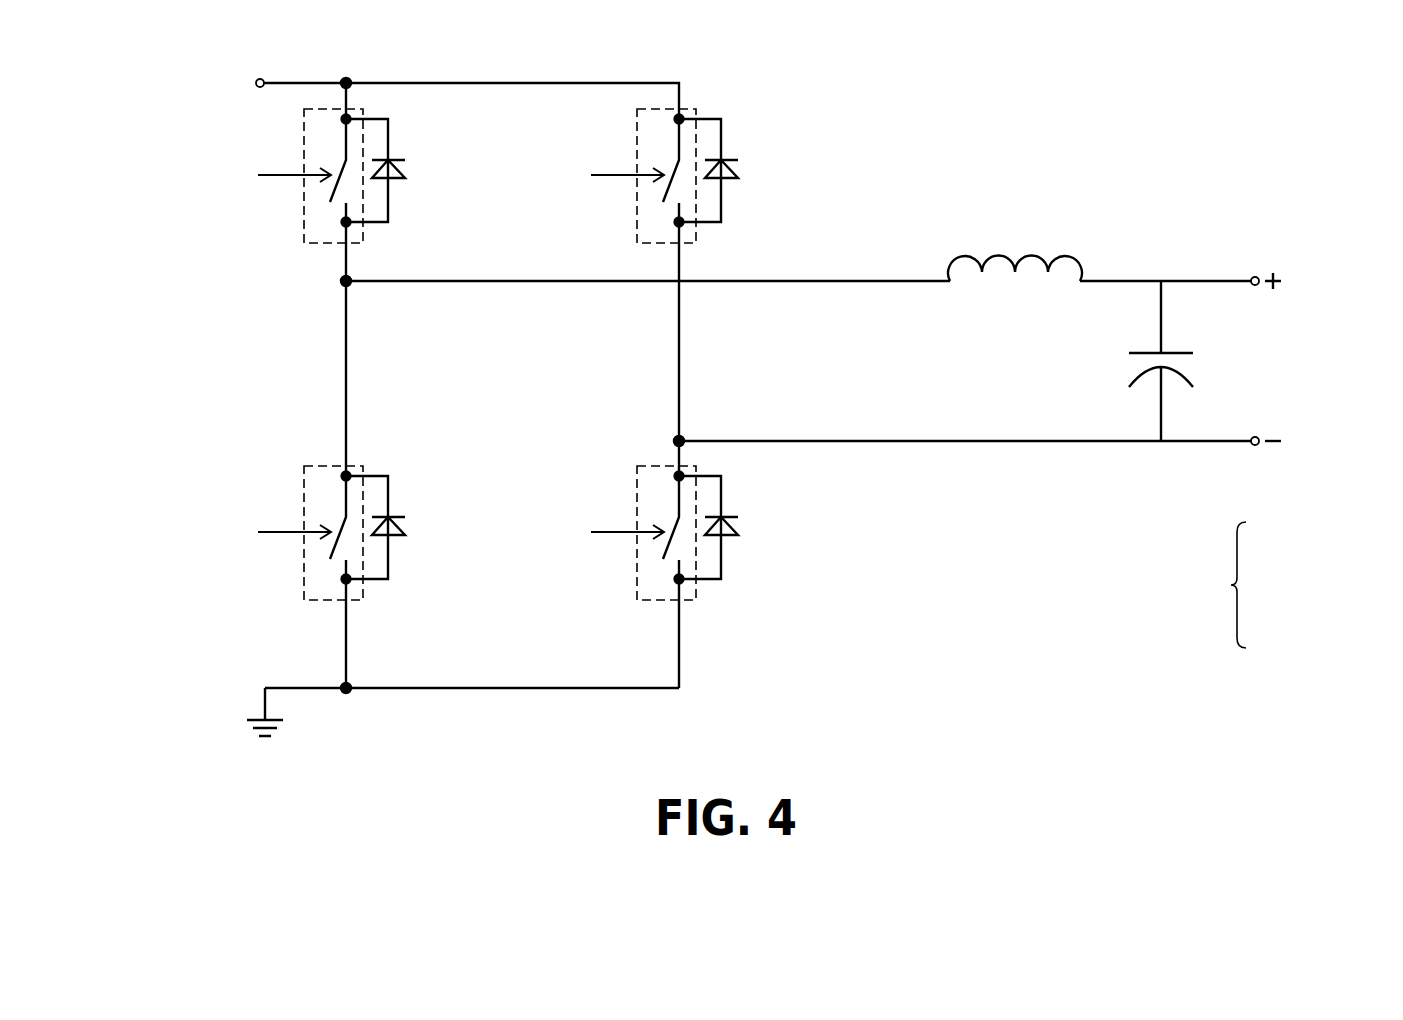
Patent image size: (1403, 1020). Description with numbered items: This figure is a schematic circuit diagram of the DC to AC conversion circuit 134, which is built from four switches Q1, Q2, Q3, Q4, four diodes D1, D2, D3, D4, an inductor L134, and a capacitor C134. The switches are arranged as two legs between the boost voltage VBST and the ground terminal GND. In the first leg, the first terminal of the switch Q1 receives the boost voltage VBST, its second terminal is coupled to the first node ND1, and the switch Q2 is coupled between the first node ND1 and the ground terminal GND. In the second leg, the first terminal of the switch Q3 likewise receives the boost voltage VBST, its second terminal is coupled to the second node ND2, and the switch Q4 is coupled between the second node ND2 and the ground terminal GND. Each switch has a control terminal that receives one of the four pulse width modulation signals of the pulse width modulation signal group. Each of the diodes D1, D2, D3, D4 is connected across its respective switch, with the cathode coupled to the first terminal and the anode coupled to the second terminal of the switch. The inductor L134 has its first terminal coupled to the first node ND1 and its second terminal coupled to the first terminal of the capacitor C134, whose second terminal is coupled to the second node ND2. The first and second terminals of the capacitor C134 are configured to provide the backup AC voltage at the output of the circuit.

The DC to AC conversion circuit 134 is at (1202, 77).
The switch Q1 is at (304, 222).
The switch Q2 is at (295, 546).
The switch Q3 is at (628, 188).
The switch Q4 is at (629, 546).
The diode D1 is at (391, 170).
The diode D2 is at (391, 527).
The diode D3 is at (724, 170).
The diode D4 is at (724, 527).
The first node ND1 is at (346, 283).
The second node ND2 is at (681, 440).
The inductor L134 is at (1015, 248).
The capacitor C134 is at (1126, 361).
The boost voltage VBST is at (228, 83).
The ground terminal GND is at (265, 730).